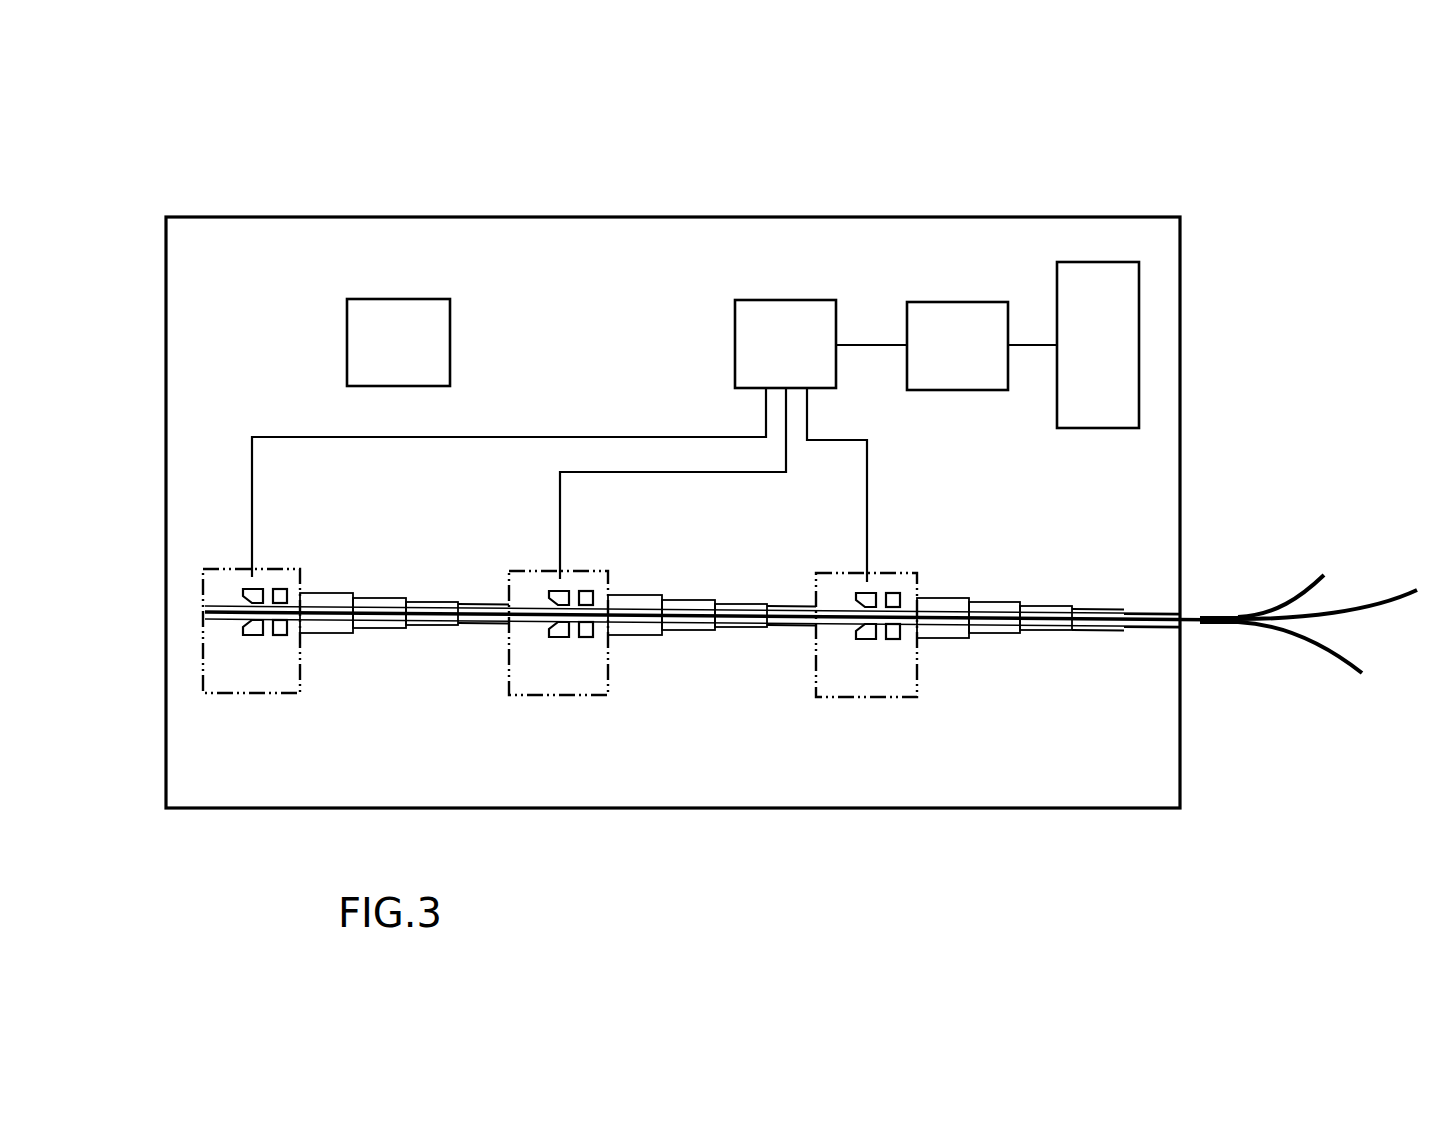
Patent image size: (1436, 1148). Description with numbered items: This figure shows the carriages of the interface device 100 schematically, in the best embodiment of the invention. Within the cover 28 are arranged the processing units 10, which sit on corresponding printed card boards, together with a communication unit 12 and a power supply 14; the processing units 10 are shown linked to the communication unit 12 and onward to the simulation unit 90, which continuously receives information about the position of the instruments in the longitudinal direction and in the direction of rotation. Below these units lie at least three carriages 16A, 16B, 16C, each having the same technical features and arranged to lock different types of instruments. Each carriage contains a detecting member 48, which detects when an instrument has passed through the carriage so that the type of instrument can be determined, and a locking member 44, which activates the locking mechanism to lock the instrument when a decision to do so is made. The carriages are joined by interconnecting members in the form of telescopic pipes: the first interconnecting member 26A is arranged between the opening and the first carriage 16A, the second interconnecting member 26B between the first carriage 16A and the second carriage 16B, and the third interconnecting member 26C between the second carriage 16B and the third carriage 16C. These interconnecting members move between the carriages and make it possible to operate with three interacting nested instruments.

The interface device 100 is at (360, 181).
The cover 28 is at (778, 217).
The power supply 14 is at (405, 355).
The processing units 10 is at (793, 355).
The communication unit 12 is at (965, 357).
The simulation unit 90 is at (1112, 359).
The locking member 44 is at (254, 595).
The detecting member 48 is at (280, 589).
The first interconnecting member 26A is at (1040, 575).
The second interconnecting member 26B is at (708, 570).
The third interconnecting member 26C is at (421, 577).
The first carriage 16A is at (880, 672).
The second carriage 16B is at (566, 675).
The third carriage 16C is at (241, 681).